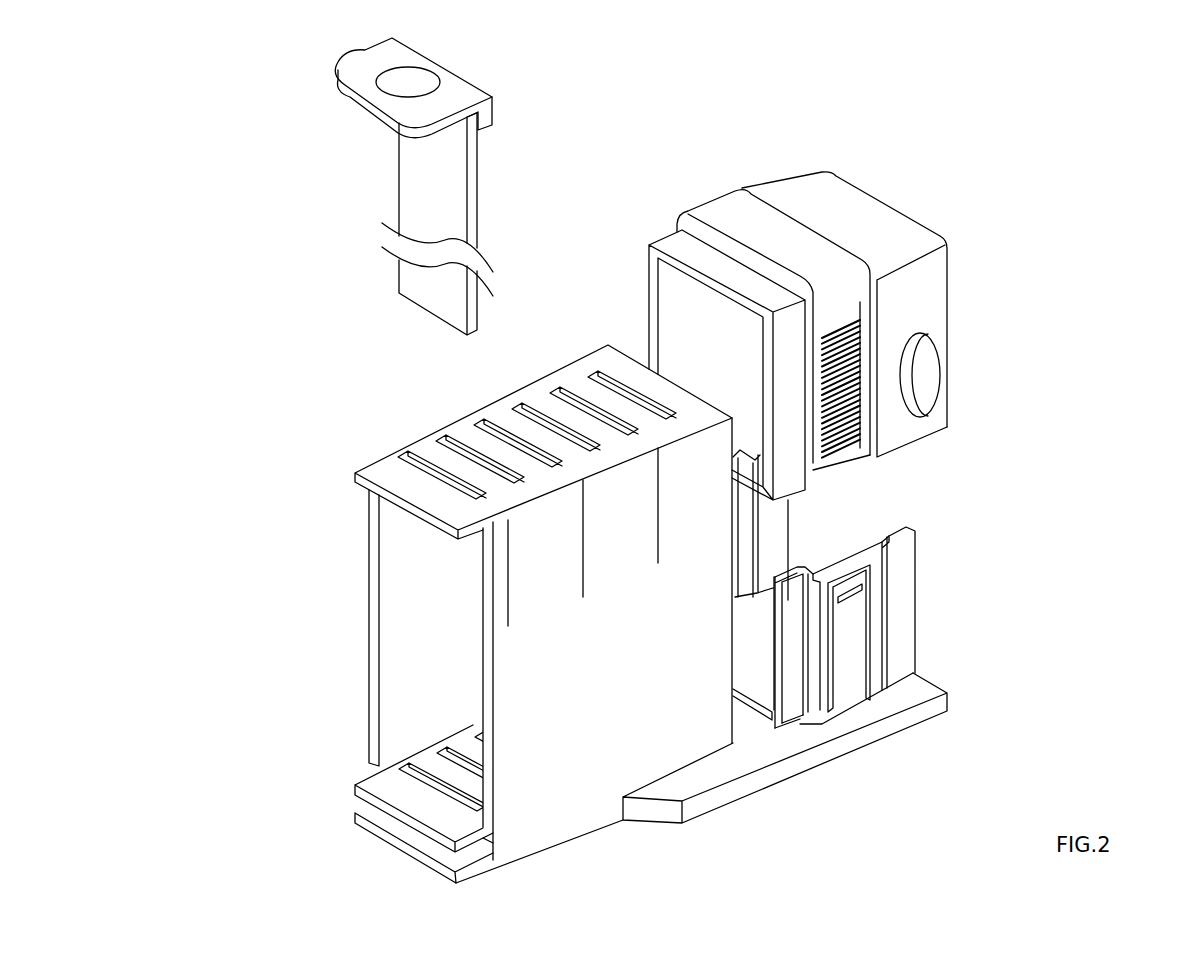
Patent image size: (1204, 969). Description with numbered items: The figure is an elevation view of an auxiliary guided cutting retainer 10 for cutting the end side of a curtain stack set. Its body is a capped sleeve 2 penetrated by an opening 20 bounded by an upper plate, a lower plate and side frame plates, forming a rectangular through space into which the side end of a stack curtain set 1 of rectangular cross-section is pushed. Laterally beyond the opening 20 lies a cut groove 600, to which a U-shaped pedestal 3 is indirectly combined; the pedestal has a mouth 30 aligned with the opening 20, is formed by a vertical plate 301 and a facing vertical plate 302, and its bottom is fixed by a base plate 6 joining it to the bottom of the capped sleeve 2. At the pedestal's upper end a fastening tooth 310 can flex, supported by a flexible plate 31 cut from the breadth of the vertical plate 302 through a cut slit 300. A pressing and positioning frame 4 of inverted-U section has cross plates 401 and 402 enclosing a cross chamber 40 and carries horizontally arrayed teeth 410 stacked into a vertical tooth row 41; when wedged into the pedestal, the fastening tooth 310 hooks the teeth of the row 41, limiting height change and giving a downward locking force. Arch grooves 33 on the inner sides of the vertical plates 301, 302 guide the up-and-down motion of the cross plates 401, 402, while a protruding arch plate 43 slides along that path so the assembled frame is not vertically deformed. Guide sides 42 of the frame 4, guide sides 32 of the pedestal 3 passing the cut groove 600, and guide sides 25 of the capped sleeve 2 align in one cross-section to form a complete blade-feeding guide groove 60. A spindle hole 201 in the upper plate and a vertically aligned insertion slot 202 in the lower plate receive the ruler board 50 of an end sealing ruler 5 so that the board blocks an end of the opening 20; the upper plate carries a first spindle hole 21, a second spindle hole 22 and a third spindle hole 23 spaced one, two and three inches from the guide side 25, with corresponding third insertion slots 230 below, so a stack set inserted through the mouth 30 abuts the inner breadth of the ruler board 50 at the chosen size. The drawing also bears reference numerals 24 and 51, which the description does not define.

The stack curtain set 1 is at (658, 563).
The capped sleeve 2 is at (380, 458).
The U-shaped pedestal 3 is at (508, 626).
The pressing and positioning frame 4 is at (848, 294).
The end sealing ruler 5 is at (462, 79).
The base plate 6 is at (895, 703).
The auxiliary guided cutting retainer 10 is at (298, 385).
The opening 20 is at (410, 628).
The first spindle hole 21 is at (566, 398).
The second spindle hole 22 is at (493, 437).
The third spindle hole 23 is at (428, 460).
The side opening 24 is at (590, 730).
The guide sides 25 is at (737, 643).
The mouth 30 is at (848, 520).
The flexible plate 31 is at (897, 703).
The guide sides 32 is at (778, 642).
The arch grooves 33 is at (845, 555).
The cross chamber 40 is at (672, 351).
The vertical tooth row 41 is at (822, 353).
The guide sides 42 is at (905, 382).
The protruding arch plate 43 is at (878, 310).
The ruler board 50 is at (415, 178).
The cap head 51 is at (360, 73).
The blade-feeding guide groove 60 is at (783, 653).
The spindle hole 201 is at (420, 487).
The insertion slot 202 is at (407, 794).
The third insertion slots 230 is at (430, 765).
The cut slit 300 is at (875, 623).
The vertical plate 301 is at (789, 548).
The vertical plate 302 is at (912, 600).
The fastening tooth 310 is at (857, 594).
The cross plate 401 is at (650, 334).
The cross plate 402 is at (772, 447).
The arrayed teeth 410 is at (833, 333).
The cut groove 600 is at (747, 716).